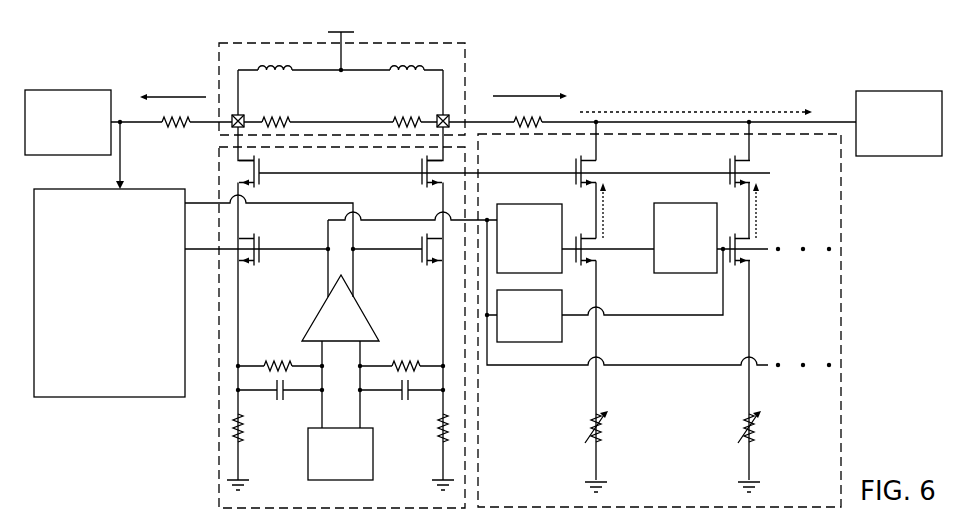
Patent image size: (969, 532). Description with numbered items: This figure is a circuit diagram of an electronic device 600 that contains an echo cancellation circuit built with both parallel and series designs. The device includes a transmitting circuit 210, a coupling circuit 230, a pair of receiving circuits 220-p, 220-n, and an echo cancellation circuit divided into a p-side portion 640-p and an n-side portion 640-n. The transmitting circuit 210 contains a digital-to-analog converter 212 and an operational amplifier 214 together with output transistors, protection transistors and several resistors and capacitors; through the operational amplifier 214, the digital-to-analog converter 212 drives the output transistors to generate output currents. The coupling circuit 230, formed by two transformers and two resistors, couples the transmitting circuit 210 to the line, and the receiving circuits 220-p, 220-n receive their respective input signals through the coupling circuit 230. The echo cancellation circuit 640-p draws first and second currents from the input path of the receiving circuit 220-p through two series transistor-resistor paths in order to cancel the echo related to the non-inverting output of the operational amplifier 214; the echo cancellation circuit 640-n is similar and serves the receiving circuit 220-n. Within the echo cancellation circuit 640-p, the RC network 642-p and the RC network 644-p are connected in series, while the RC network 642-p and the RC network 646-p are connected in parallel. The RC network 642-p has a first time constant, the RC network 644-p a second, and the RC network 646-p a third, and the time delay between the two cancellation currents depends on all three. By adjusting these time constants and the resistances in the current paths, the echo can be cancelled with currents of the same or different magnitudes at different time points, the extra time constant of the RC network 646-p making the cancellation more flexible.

The electronic device 600 is at (133, 36).
The receiving circuit 220-n is at (52, 90).
The receiving circuit 220-p is at (918, 91).
The coupling circuit 230 is at (219, 52).
The transmitting circuit 210 is at (219, 470).
The digital-to-analog converter 212 is at (373, 462).
The operational amplifier 214 is at (367, 320).
The echo cancellation circuit 640-n is at (92, 310).
The echo cancellation circuit 640-p is at (841, 220).
The RC network 642-p is at (533, 204).
The RC network 644-p is at (689, 203).
The RC network 646-p is at (515, 342).